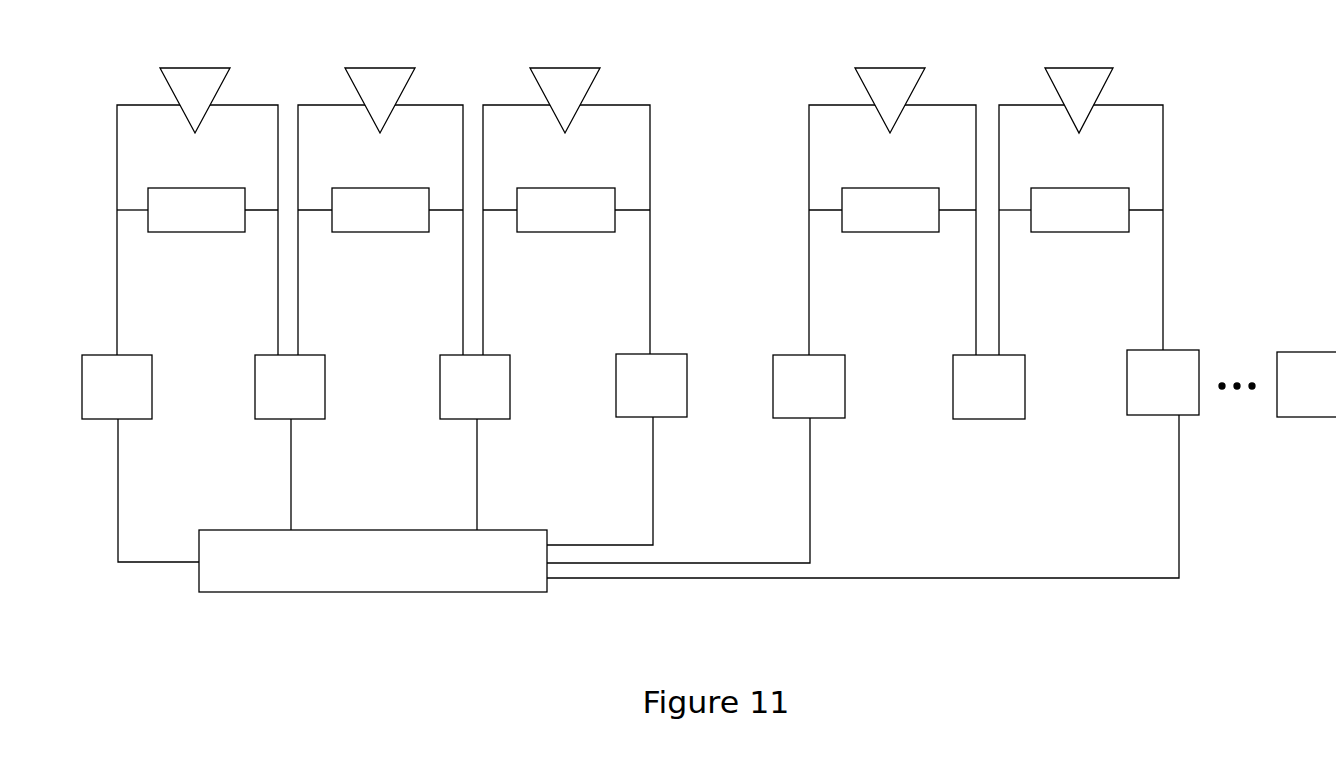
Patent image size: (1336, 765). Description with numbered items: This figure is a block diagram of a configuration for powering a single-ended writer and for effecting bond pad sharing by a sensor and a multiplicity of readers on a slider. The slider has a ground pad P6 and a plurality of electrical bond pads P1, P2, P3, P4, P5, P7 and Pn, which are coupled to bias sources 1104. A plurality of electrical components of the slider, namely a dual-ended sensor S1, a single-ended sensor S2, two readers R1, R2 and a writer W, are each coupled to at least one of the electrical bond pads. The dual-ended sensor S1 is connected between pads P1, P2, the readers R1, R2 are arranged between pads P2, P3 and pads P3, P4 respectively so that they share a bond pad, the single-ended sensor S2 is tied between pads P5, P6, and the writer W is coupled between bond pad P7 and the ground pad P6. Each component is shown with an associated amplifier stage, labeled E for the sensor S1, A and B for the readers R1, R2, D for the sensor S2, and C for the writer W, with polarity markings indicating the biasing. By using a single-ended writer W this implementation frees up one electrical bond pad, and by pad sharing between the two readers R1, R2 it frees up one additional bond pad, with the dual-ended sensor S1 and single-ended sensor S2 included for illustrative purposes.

The bias sources 1104 is at (401, 530).
The electrical bond pad P1 is at (117, 387).
The electrical bond pad P2 is at (290, 387).
The electrical bond pad P3 is at (475, 387).
The electrical bond pad P4 is at (651, 385).
The electrical bond pad P5 is at (809, 386).
The ground pad P6 is at (989, 387).
The electrical bond pad P7 is at (1163, 382).
The electrical bond pad Pn is at (1306, 384).
The dual-ended sensor S1 is at (196, 210).
The single-ended sensor S2 is at (890, 210).
The reader R1 is at (380, 210).
The reader R2 is at (566, 210).
The writer W is at (1080, 210).
The amplifier A is at (380, 100).
The amplifier B is at (565, 100).
The amplifier C is at (1079, 100).
The amplifier D is at (890, 100).
The amplifier E is at (195, 100).